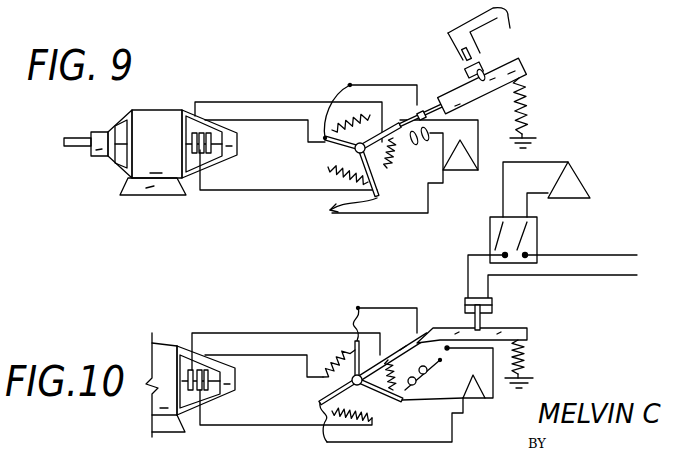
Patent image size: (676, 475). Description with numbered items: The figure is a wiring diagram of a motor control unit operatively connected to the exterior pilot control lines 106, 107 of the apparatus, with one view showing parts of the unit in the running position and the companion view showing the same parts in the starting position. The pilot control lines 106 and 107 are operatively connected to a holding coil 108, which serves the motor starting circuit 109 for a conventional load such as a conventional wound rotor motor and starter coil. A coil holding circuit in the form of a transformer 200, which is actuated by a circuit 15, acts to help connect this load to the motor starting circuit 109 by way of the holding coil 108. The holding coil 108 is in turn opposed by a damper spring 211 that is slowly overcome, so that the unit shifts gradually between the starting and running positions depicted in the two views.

In FIG. 9, the motor starting circuit 109 is at (286, 200).
In FIG. 10, the motor starting circuit 109 is at (226, 323).
In FIG. 9, the exterior pilot control line 106 is at (498, 20).
In FIG. 9, the exterior pilot control line 107 is at (500, 38).
In FIG. 10, the exterior pilot control line 107 is at (463, 339).
In FIG. 9, the holding coil 108 is at (464, 70).
In FIG. 10, the holding coil 108 is at (492, 307).
In FIG. 9, the damper spring 211 is at (530, 108).
In FIG. 10, the damper spring 211 is at (522, 353).
In FIG. 9, the circuit 15 is at (467, 173).
In FIG. 10, the circuit 15 is at (483, 400).
In FIG. 9, the transformer 200 is at (532, 233).